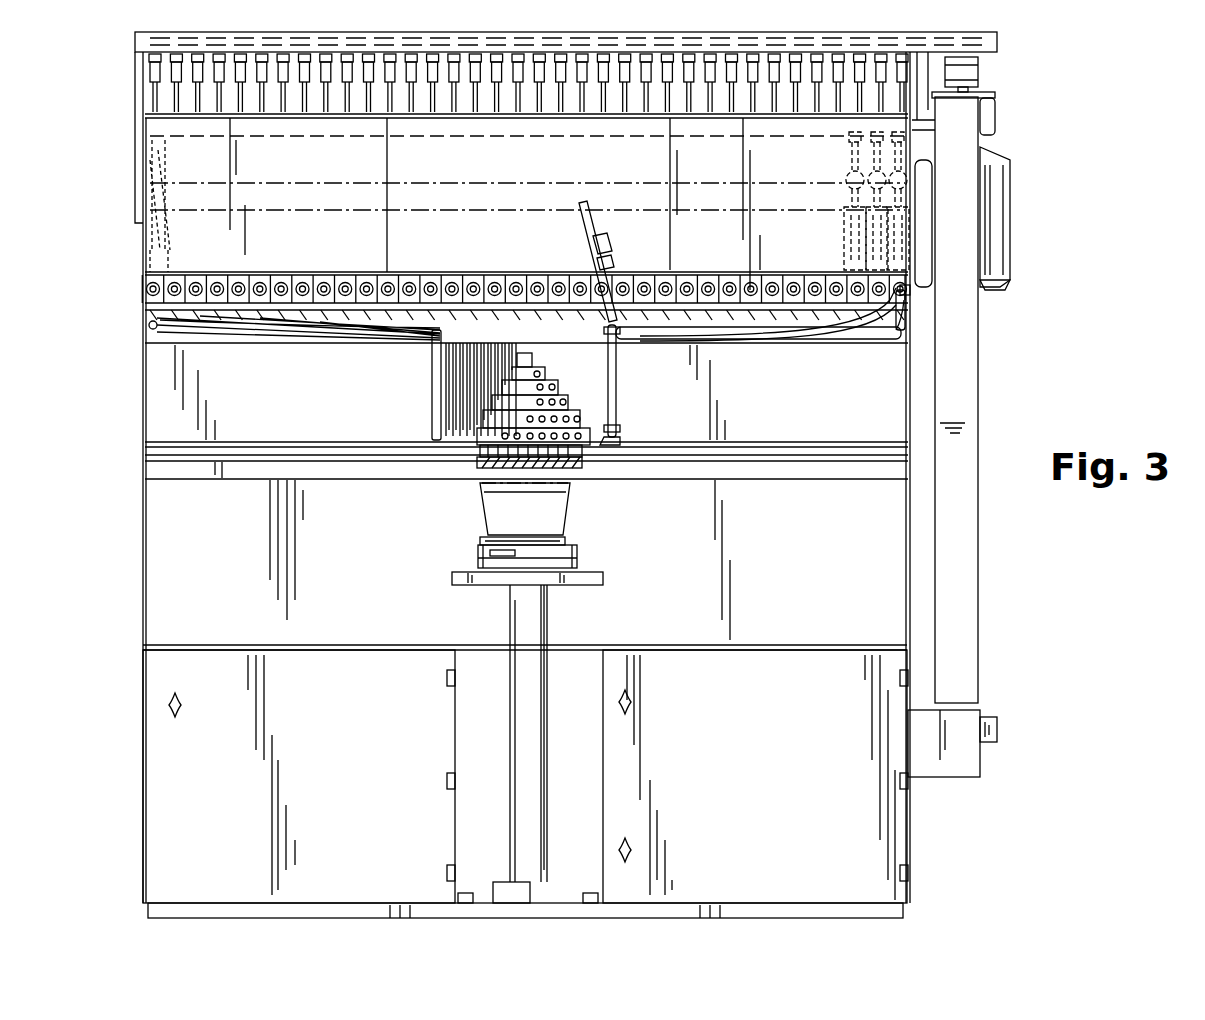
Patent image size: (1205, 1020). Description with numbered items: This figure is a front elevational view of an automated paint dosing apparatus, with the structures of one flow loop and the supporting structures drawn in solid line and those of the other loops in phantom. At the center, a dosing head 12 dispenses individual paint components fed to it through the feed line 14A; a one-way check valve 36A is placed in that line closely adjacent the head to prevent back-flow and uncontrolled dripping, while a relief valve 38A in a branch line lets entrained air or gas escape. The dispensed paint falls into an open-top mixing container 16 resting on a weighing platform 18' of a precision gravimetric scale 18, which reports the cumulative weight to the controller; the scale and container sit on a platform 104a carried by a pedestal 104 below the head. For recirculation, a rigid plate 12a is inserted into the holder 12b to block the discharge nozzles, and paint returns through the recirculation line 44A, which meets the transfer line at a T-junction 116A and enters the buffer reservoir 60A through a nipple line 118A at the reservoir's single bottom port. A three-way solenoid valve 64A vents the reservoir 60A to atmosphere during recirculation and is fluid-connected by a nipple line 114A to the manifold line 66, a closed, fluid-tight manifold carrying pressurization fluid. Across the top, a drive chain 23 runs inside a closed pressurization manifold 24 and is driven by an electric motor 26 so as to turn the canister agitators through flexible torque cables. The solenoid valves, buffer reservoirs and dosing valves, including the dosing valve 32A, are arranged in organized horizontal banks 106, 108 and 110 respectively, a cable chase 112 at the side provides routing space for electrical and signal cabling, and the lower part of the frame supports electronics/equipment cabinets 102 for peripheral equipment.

The dosing head 12 is at (511, 428).
The rigid plate 12a is at (575, 470).
The holder 12b is at (482, 462).
The feed line 14A is at (758, 342).
The mixing container 16 is at (555, 512).
The precision gravimetric scale 18 is at (556, 556).
The weighing platform 18' is at (475, 551).
The drive chain 23 is at (150, 46).
The pressurization manifold 24 is at (998, 40).
The electric motor 26 is at (996, 216).
The dosing valve 32A is at (908, 300).
The one-way check valve 36A is at (620, 440).
The relief valve 38A is at (606, 243).
The recirculation line 44A is at (668, 335).
The buffer reservoir 60A is at (955, 238).
The three-way solenoid valve 64A is at (940, 182).
The manifold line 66 is at (157, 127).
The electronics/equipment cabinets 102 is at (210, 859).
The pedestal 104 is at (548, 624).
The platform 104a is at (468, 585).
The solenoid valve bank 106 is at (118, 157).
The buffer reservoir bank 108 is at (118, 207).
The dosing valve bank 110 is at (118, 276).
The cable chase 112 is at (967, 563).
The nipple line 114A is at (920, 150).
The T-junction 116A is at (896, 342).
The nipple line 118A is at (906, 305).